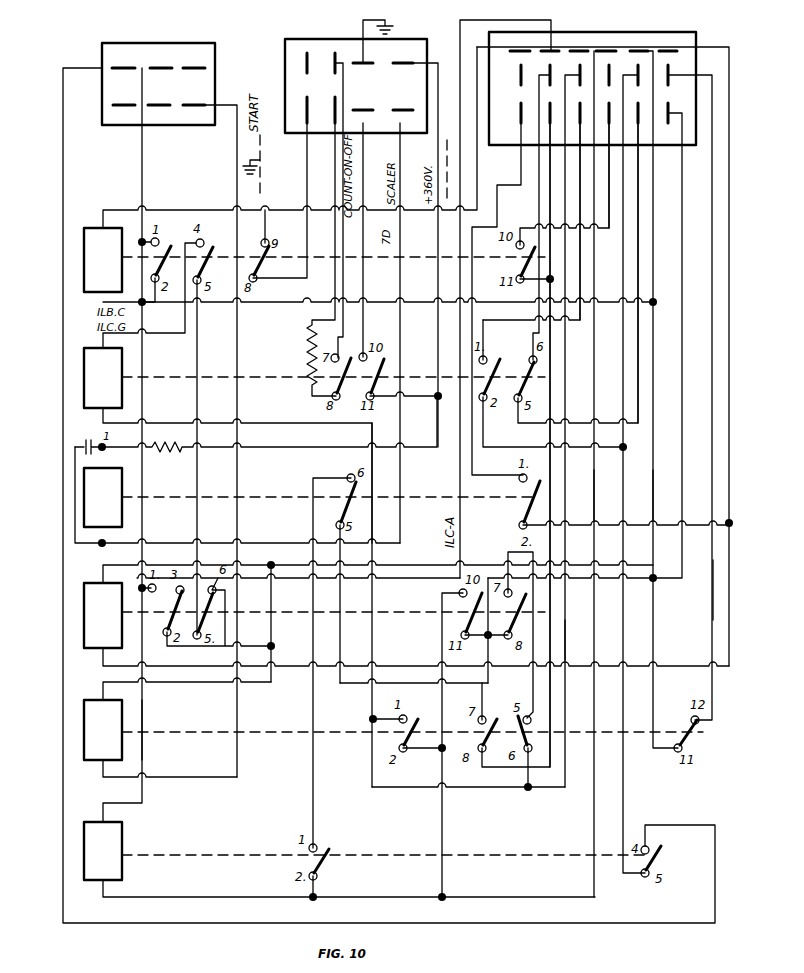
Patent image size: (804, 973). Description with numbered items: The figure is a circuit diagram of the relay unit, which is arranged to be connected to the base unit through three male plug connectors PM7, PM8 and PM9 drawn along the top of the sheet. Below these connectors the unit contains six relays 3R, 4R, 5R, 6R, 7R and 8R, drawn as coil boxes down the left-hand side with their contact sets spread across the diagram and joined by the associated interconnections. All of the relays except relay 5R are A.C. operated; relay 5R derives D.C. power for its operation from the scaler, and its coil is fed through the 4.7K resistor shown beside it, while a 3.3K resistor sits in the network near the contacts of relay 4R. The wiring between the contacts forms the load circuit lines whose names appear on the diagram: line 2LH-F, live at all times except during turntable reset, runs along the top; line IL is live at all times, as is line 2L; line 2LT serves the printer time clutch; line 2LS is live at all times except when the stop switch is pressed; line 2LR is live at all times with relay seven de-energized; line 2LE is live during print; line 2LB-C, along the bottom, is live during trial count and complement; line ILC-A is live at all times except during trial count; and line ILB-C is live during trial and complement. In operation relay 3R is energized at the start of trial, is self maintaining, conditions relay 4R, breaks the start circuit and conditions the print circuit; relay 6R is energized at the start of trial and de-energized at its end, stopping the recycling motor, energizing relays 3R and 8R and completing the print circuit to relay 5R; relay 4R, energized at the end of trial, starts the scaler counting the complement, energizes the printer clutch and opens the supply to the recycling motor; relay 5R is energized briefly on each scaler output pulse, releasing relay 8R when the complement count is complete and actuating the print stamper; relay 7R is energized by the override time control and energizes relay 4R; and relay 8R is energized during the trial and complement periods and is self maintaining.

The male plug connector PM7 is at (158, 75).
The male plug connector PM8 is at (356, 75).
The male plug connector PM9 is at (592, 79).
The relay 3R is at (103, 260).
The relay 4R is at (103, 378).
The relay 5R is at (103, 497).
The relay 6R is at (103, 615).
The relay 7R is at (103, 730).
The relay 8R is at (103, 851).
The load circuit line 2LHF 2LH-F is at (290, 137).
The load circuit line 1L IL is at (378, 294).
The printer time clutch line 2LT is at (531, 221).
The load circuit line 2L is at (605, 495).
The load circuit line 2LS is at (665, 495).
The load circuit line 2LR is at (705, 590).
The print line 2LE is at (574, 640).
The load circuit line 2LB-C is at (349, 888).
The load circuit line 1LC-A ILC-A is at (189, 457).
The load circuit line 1LB-C ILB-C is at (134, 730).
The 3.3K resistor 3.3K is at (302, 259).
The 4.7K resistor 4.7K is at (269, 435).